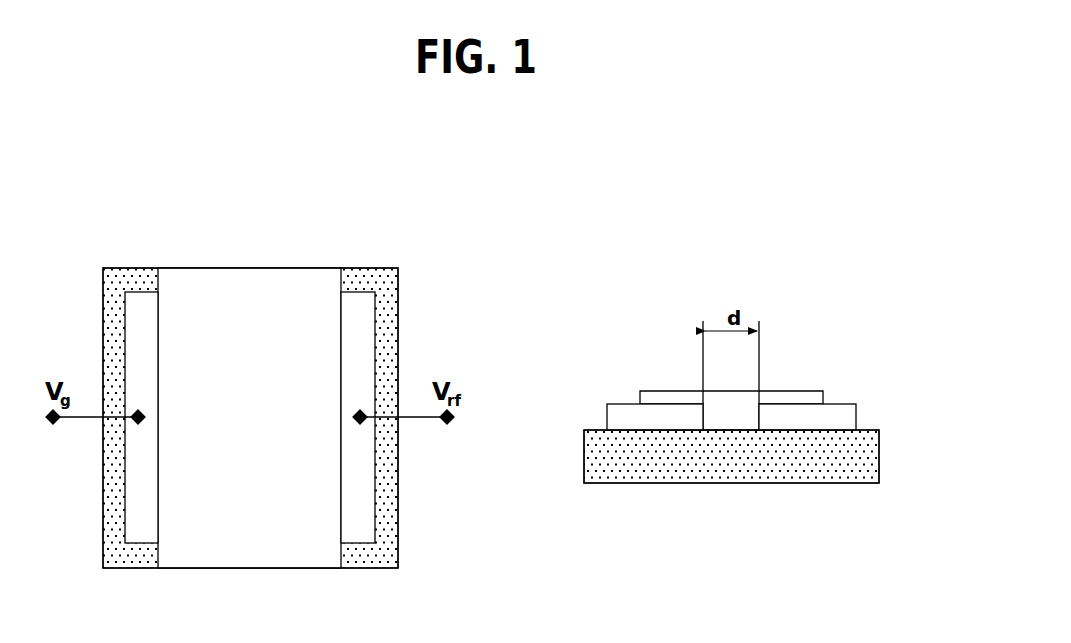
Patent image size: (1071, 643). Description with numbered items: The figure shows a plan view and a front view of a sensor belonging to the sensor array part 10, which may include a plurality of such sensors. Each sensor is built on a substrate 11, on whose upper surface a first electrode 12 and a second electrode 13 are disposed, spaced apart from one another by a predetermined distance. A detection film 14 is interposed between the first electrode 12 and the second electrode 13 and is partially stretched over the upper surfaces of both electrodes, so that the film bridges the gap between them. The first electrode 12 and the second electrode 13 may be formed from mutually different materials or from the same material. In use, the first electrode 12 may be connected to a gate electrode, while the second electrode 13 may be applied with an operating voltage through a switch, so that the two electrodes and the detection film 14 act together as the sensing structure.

The sensor array part 10 is at (120, 258).
The substrate 11 is at (112, 500).
The first electrode 12 is at (145, 531).
The second electrode 13 is at (365, 530).
The detection film 14 is at (245, 547).